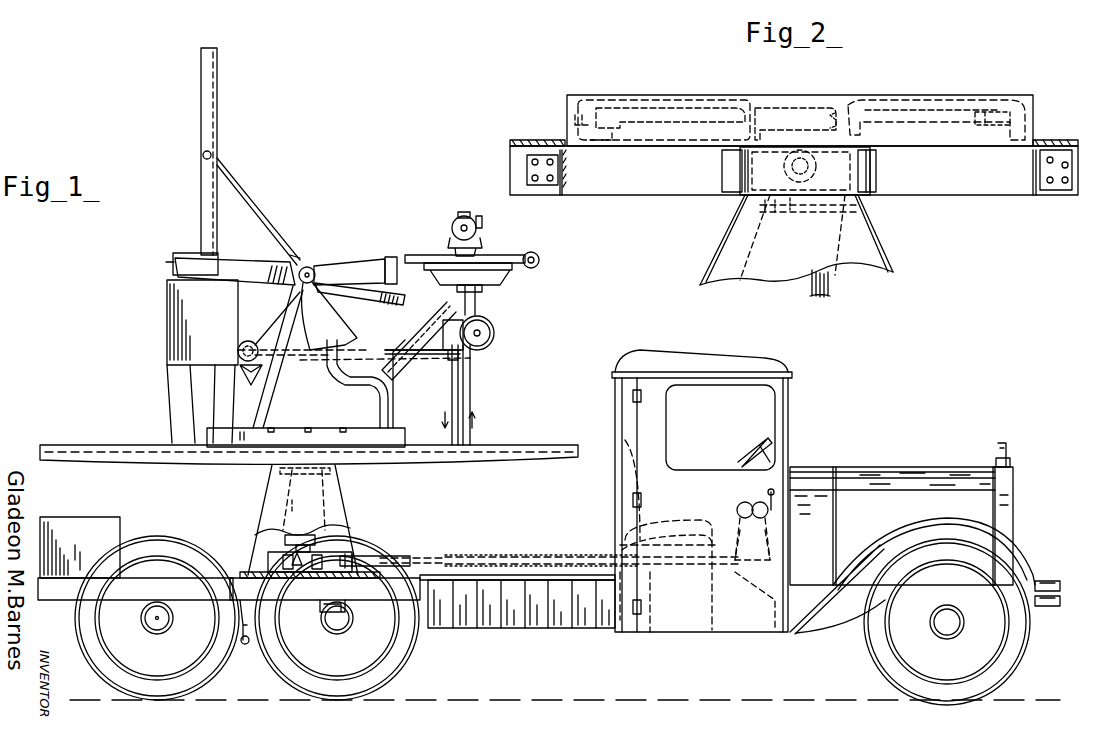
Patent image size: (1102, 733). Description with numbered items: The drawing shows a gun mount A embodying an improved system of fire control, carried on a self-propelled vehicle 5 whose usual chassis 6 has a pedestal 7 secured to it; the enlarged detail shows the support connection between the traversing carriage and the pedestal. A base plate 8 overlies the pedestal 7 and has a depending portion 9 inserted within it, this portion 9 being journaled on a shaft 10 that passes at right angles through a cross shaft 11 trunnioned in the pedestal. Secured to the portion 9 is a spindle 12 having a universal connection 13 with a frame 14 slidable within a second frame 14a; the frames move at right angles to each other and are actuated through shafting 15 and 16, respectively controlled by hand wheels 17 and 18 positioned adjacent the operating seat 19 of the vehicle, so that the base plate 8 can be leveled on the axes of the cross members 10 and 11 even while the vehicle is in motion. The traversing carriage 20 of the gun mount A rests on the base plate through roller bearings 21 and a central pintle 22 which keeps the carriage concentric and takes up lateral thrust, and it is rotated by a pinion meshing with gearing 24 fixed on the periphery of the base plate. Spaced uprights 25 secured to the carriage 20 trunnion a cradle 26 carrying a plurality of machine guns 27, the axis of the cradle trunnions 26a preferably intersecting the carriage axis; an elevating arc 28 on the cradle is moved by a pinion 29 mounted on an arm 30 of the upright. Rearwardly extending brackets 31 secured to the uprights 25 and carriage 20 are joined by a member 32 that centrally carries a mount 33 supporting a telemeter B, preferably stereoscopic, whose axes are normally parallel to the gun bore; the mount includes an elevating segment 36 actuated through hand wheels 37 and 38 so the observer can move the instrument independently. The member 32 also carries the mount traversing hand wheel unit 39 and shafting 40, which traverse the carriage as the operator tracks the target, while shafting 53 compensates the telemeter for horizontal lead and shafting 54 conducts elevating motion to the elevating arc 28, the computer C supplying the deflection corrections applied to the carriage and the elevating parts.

In FIG. 1, the self-propelled vehicle 5 is at (517, 611).
In FIG. 1, the chassis 6 is at (325, 589).
In FIG. 1, the pedestal 7 is at (335, 498).
In FIG. 2, the pedestal 7 is at (862, 238).
In FIG. 2, the base plate 8 is at (920, 120).
In FIG. 2, the depending portion 9 is at (794, 159).
In FIG. 2, the shaft 10 is at (816, 163).
In FIG. 2, the cross shaft 11 is at (785, 200).
In FIG. 1, the spindle 12 is at (298, 506).
In FIG. 2, the spindle 12 is at (830, 286).
In FIG. 1, the universal connection 13 is at (308, 560).
In FIG. 1, the frame 14 is at (329, 534).
In FIG. 1, the second frame 14a is at (345, 555).
In FIG. 1, the shafting 15 is at (425, 558).
In FIG. 1, the shafting 16 is at (546, 557).
In FIG. 1, the hand wheel 17 is at (738, 508).
In FIG. 1, the hand wheel 18 is at (758, 502).
In FIG. 1, the operating seat 19 is at (675, 532).
In FIG. 1, the traversing carriage 20 is at (398, 440).
In FIG. 2, the traversing carriage 20 is at (655, 103).
In FIG. 2, the roller bearings 21 is at (990, 110).
In FIG. 2, the central pintle 22 is at (800, 105).
In FIG. 2, the gearing 24 is at (592, 140).
In FIG. 1, the uprights 25 is at (278, 357).
In FIG. 1, the cradle 26 is at (262, 276).
In FIG. 1, the cradle trunnions 26a is at (309, 266).
In FIG. 1, the machine guns 27 is at (350, 263).
In FIG. 1, the elevating arc 28 is at (329, 316).
In FIG. 1, the pinion 29 is at (238, 351).
In FIG. 1, the arm 30 is at (250, 375).
In FIG. 1, the rearwardly extending brackets 31 is at (410, 320).
In FIG. 1, the member 32 is at (460, 300).
In FIG. 1, the mount 33 is at (490, 276).
In FIG. 1, the elevating segment 36 is at (452, 233).
In FIG. 1, the hand wheel 37 is at (540, 259).
In FIG. 1, the hand wheel 38 is at (484, 224).
In FIG. 1, the mount traversing hand wheel unit 39 is at (495, 336).
In FIG. 1, the shafting 40 is at (450, 378).
In FIG. 1, the shafting 53 is at (468, 410).
In FIG. 1, the shafting 54 is at (430, 352).
In FIG. 1, the gun mount A is at (265, 243).
In FIG. 1, the telemeter B is at (458, 210).
In FIG. 1, the computer C is at (202, 348).